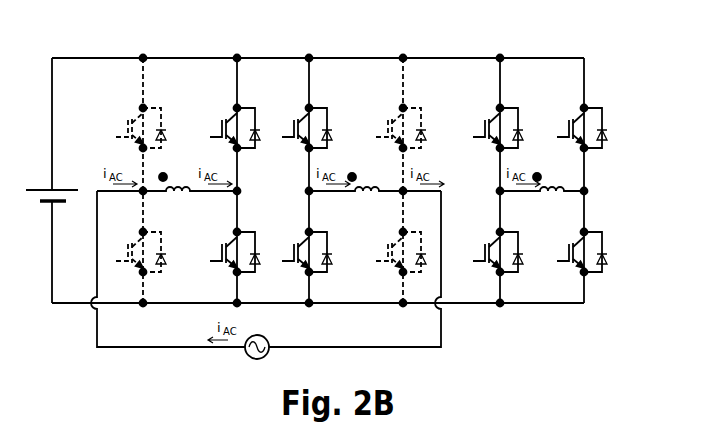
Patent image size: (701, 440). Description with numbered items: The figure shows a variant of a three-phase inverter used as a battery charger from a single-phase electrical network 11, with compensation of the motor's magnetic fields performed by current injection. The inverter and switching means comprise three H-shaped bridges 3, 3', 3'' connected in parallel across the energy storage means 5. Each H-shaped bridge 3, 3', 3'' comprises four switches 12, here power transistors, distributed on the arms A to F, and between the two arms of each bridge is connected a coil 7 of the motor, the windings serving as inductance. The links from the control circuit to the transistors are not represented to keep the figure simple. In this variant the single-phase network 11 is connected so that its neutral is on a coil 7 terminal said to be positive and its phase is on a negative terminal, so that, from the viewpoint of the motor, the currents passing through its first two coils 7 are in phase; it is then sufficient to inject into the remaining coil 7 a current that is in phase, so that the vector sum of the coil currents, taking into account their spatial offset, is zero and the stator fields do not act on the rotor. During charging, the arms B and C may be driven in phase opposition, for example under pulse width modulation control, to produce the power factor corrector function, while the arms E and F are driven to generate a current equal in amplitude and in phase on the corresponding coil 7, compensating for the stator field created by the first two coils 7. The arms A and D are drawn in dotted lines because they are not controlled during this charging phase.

The H-shaped bridge 3 is at (187, 159).
The H-shaped bridge 3' is at (358, 159).
The H-shaped bridge 3'' is at (542, 159).
The energy storage means 5 is at (37, 190).
The coil 7 is at (177, 183).
The single-phase electrical network 11 is at (254, 358).
The switch 12 is at (153, 111).
The arm A is at (140, 78).
The arm B is at (237, 78).
The arm C is at (309, 72).
The arm D is at (403, 82).
The arm E is at (500, 78).
The arm F is at (584, 88).